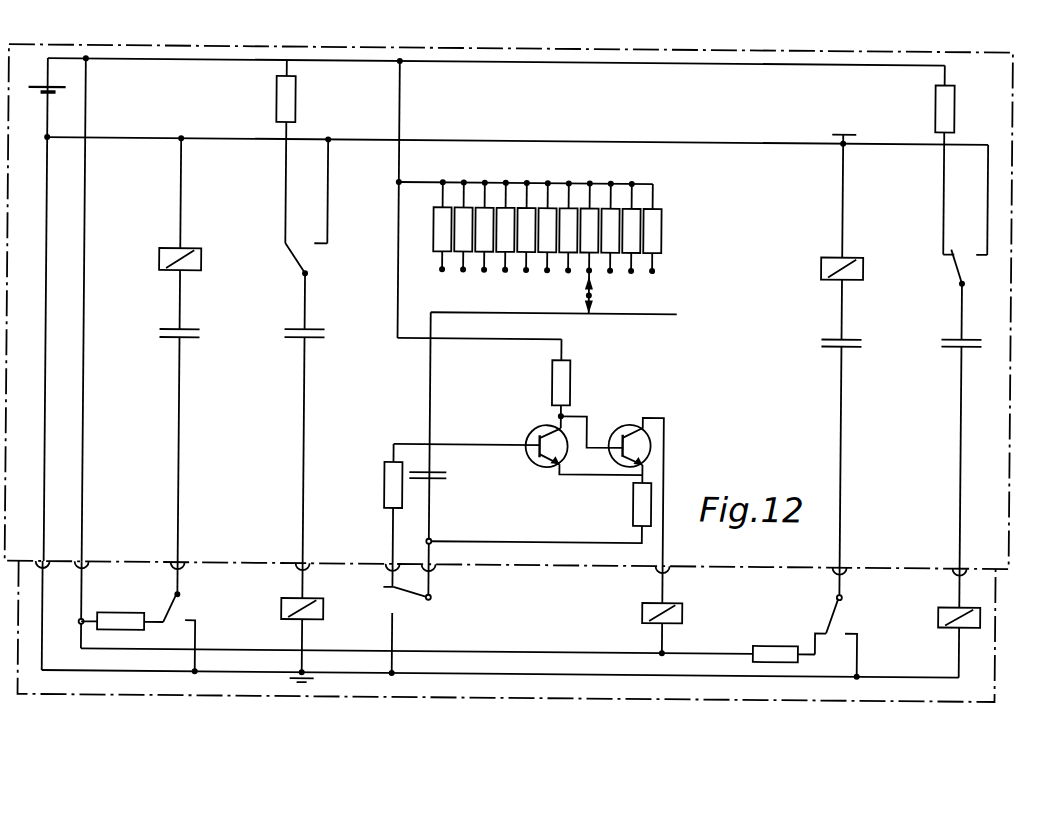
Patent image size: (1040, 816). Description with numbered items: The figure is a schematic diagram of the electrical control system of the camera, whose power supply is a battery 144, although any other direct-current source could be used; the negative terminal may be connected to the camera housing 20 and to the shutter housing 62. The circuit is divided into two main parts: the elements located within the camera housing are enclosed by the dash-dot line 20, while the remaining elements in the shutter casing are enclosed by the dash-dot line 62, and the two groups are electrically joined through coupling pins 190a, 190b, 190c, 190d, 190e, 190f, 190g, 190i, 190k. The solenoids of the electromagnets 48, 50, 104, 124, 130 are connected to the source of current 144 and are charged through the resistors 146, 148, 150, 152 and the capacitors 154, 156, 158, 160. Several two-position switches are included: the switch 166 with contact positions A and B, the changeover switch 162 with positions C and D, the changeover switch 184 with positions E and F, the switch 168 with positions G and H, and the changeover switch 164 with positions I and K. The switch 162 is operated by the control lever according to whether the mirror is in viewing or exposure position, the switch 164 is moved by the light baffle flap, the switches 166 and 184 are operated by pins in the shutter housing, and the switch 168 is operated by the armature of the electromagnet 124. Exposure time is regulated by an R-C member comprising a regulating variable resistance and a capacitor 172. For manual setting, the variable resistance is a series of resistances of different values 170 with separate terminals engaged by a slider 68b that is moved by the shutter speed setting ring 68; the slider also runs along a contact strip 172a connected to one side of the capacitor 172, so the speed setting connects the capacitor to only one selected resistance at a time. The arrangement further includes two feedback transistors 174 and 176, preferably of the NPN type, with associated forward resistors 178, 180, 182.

The camera housing 20 is at (1010, 493).
The shutter housing 62 is at (997, 660).
The battery 144 is at (36, 96).
The resistor 146 is at (294, 101).
The changeover switch 162 is at (296, 258).
The electromagnet 48 is at (195, 250).
The capacitor 158 is at (188, 331).
The capacitor 154 is at (312, 331).
The series of resistances 170 is at (660, 246).
The shutter speed setting ring 68 is at (637, 297).
The slider 68b is at (588, 295).
The contact strip 172a is at (668, 318).
The forward resistor 180 is at (573, 377).
The feedback transistor 174 is at (535, 434).
The feedback transistor 176 is at (634, 424).
The forward resistor 182 is at (632, 510).
The forward resistor 178 is at (384, 478).
The capacitor 172 is at (448, 480).
The electromagnet 50 is at (850, 255).
The capacitor 160 is at (848, 336).
The resistor 148 is at (951, 108).
The changeover switch 164 is at (963, 265).
The capacitor 156 is at (950, 348).
The coupling pin 190a is at (48, 556).
The coupling pin 190b is at (84, 557).
The coupling pin 190c is at (181, 557).
The coupling pin 190d is at (306, 557).
The coupling pin 190e is at (392, 556).
The coupling pin 190f is at (432, 557).
The coupling pin 190g is at (667, 558).
The coupling pin 190i is at (844, 565).
The coupling pin 190k is at (958, 565).
The resistor 150 is at (125, 615).
The switch 166 is at (182, 607).
The electromagnet 130 is at (279, 613).
The changeover switch 184 is at (410, 596).
The electromagnet 124 is at (685, 611).
The resistor 152 is at (771, 642).
The switch 168 is at (834, 624).
The electromagnet 104 is at (940, 611).